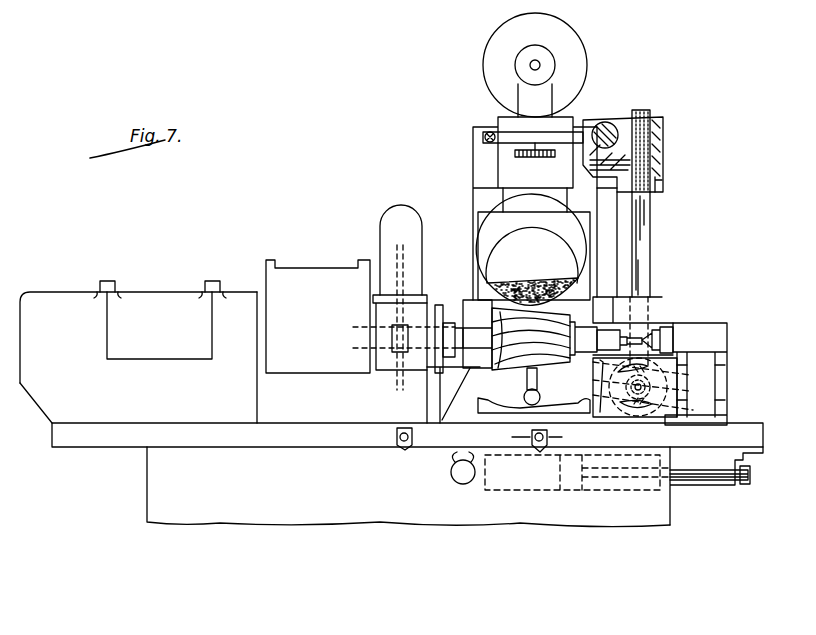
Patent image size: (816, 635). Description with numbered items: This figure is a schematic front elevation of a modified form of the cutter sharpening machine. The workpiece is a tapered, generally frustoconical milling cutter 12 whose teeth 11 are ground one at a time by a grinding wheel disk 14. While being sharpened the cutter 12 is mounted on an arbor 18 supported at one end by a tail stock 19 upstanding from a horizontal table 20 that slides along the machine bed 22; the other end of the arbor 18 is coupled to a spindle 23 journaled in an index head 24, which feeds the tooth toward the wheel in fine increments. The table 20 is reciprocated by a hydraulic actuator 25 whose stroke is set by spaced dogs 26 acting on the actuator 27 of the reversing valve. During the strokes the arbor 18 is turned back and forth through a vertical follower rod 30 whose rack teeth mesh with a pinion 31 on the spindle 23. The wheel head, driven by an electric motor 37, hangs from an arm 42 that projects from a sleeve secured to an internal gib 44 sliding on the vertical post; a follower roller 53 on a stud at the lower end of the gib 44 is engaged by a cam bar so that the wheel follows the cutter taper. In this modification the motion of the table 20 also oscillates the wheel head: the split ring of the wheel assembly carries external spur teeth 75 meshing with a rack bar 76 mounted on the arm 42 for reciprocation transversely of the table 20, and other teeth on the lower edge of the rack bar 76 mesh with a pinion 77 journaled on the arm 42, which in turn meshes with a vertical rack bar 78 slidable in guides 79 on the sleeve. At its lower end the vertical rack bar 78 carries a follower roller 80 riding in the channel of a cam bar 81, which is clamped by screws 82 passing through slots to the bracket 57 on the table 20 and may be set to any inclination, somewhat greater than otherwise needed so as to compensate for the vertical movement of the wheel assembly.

The teeth 11 is at (495, 362).
The milling cutter 12 is at (517, 353).
The disk 14 is at (565, 264).
The arbor 18 is at (472, 333).
The tail stock 19 is at (694, 337).
The horizontal table 20 is at (713, 440).
The machine bed 22 is at (150, 490).
The spindle 23 is at (383, 350).
The index head 24 is at (300, 278).
The hydraulic actuator 25 is at (574, 490).
The dogs 26 is at (400, 447).
The actuator 27 is at (458, 470).
The vertical follower rod 30 is at (396, 380).
The pinion 31 is at (394, 326).
The electric motor 37 is at (492, 62).
The arm 42 is at (492, 165).
The internal gib 44 is at (533, 379).
The follower roller 53 is at (529, 401).
The bracket 57 is at (478, 403).
The external spur teeth 75 is at (583, 138).
The rack bar 76 is at (608, 124).
The pinion 77 is at (636, 118).
The vertical rack bar 78 is at (650, 213).
The guides 79 is at (661, 186).
The follower roller 80 is at (700, 391).
The cam bar 81 is at (700, 378).
The screws 82 is at (640, 408).